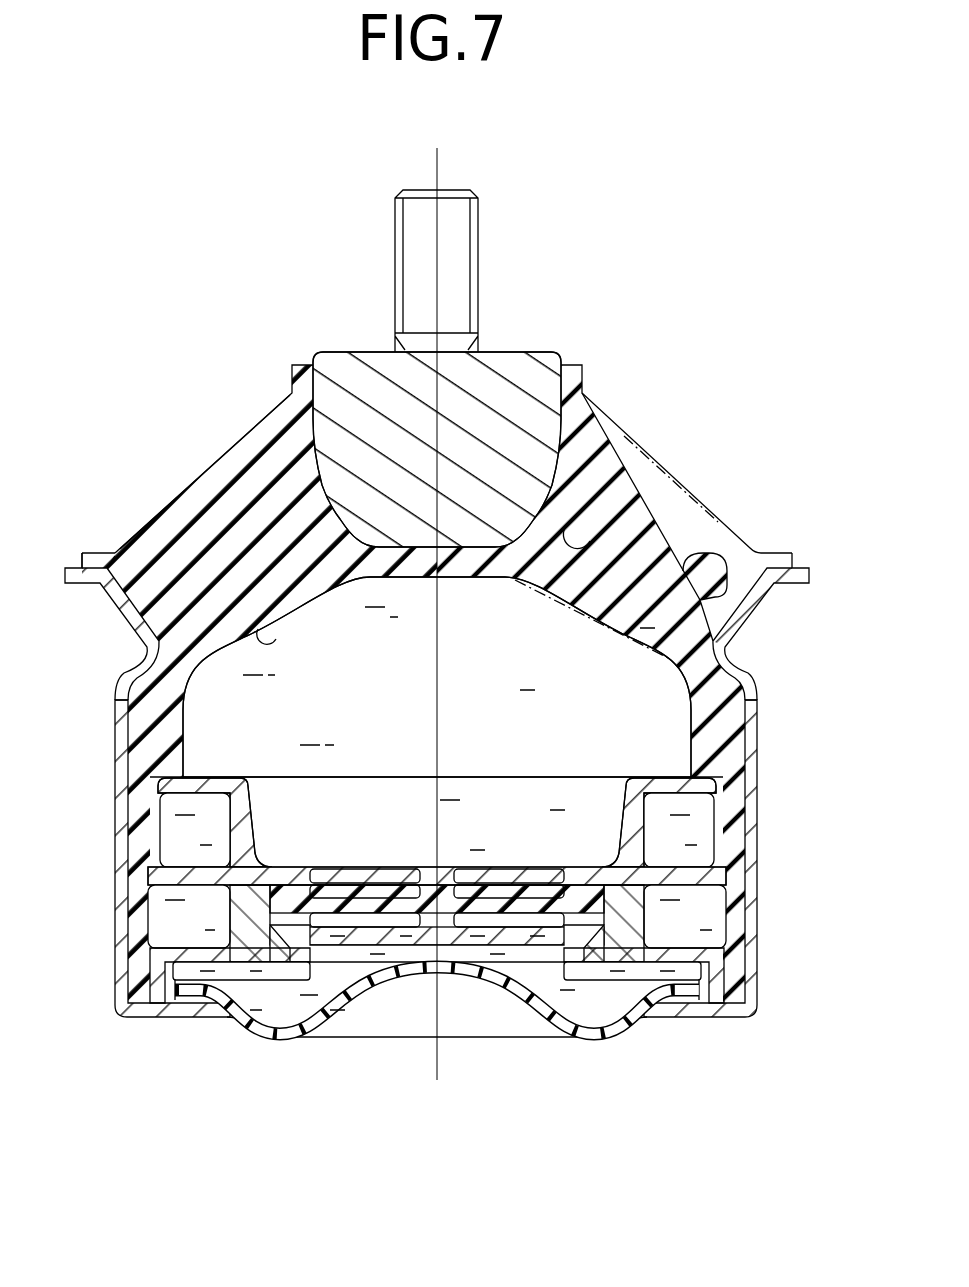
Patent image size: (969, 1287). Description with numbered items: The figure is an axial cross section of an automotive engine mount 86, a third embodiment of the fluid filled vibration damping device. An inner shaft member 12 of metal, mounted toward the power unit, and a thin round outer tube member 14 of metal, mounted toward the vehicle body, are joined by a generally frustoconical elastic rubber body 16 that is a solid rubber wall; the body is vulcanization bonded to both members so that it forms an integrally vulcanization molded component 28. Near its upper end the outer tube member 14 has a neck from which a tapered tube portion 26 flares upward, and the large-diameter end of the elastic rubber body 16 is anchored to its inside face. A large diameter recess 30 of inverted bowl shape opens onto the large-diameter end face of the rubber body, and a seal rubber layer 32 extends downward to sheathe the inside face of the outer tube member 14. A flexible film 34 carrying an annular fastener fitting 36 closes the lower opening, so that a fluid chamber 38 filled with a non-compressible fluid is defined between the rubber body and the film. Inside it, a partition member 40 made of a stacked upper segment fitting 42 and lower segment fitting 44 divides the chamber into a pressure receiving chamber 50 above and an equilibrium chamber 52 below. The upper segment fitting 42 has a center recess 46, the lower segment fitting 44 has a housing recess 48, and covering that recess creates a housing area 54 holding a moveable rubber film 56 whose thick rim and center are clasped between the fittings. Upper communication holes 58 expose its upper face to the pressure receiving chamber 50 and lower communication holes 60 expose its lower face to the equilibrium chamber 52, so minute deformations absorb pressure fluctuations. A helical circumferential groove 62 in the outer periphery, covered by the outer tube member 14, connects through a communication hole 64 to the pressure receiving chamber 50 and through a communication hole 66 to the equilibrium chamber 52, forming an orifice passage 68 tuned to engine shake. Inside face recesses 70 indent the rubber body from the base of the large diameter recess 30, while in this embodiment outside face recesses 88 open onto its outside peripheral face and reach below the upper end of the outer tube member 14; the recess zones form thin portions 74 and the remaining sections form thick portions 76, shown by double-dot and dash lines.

The inner shaft member 12 is at (352, 337).
The outer tube member 14 is at (761, 669).
The elastic rubber body 16 is at (183, 490).
The tapered tube portion 26 is at (130, 595).
The integrally vulcanization molded component 28 is at (257, 398).
The large diameter recess 30 is at (257, 628).
The seal rubber layer 32 is at (122, 945).
The flexible film 34 is at (645, 1007).
The fastener fitting 36 is at (717, 977).
The fluid chamber 38 is at (221, 725).
The partition member 40 is at (672, 773).
The upper segment fitting 42 is at (720, 880).
The lower segment fitting 44 is at (260, 940).
The center recess 46 is at (662, 738).
The housing recess 48 is at (293, 816).
The pressure receiving chamber 50 is at (406, 704).
The equilibrium chamber 52 is at (624, 1011).
The housing area 54 is at (473, 920).
The moveable rubber film 56 is at (530, 903).
The upper communication holes 58 is at (373, 873).
The lower communication holes 60 is at (375, 935).
The circumferential groove 62 is at (165, 850).
The communication hole 64 is at (197, 776).
The communication hole 66 is at (725, 925).
The orifice passage 68 is at (690, 830).
The inside face recesses 70 is at (638, 482).
The thin portions 74 is at (655, 553).
The thick portions 76 is at (278, 500).
The engine mount 86 is at (620, 376).
The outside face recesses 88 is at (757, 588).